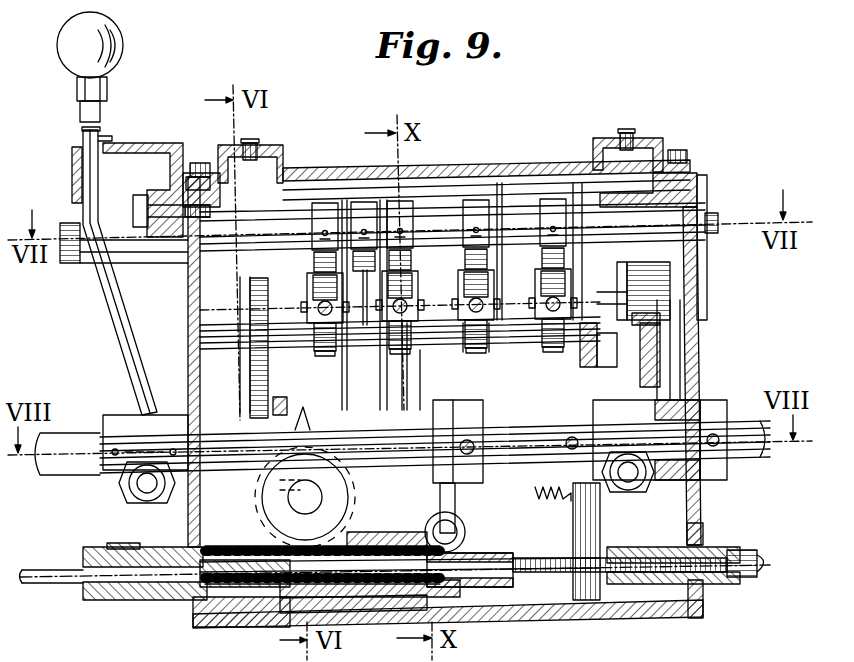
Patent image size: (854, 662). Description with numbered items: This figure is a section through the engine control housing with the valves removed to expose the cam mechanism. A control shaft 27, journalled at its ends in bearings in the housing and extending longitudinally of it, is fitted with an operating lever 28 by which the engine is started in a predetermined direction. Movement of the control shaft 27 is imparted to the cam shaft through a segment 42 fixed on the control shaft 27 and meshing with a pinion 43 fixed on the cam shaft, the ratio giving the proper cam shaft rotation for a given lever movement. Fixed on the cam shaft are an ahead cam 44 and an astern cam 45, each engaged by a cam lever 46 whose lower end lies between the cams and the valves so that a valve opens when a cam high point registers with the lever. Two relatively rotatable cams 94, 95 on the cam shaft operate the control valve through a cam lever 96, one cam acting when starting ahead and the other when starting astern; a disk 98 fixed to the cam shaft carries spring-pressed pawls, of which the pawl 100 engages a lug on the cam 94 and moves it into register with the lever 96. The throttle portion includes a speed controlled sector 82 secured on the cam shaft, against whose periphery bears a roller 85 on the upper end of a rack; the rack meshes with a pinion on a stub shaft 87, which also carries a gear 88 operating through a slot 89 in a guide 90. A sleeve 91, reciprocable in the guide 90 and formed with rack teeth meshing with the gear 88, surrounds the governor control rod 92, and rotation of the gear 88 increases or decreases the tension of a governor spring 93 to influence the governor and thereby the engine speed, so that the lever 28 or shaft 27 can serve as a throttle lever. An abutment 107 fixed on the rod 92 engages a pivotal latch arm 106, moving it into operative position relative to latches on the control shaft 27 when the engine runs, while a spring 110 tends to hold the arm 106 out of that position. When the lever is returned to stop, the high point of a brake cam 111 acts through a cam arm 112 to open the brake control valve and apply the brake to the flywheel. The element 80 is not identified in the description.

The control shaft 27 is at (78, 442).
The operating lever 28 is at (123, 50).
The segment 42 is at (655, 377).
The pinion 43 is at (652, 277).
The ahead cam 44 is at (331, 352).
The astern cam 45 is at (400, 352).
The cam lever 46 is at (309, 266).
The pinion shaft nut 80 is at (453, 495).
The speed controlled sector 82 is at (270, 360).
The roller 85 is at (267, 423).
The stub shaft 87 is at (307, 495).
The gear 88 is at (343, 493).
The slot 89 is at (347, 527).
The guide 90 is at (397, 535).
The sleeve 91 is at (175, 548).
The governor control rod 92 is at (65, 582).
The governor spring 93 is at (241, 583).
The cam 94 is at (537, 348).
The cam 95 is at (557, 350).
The cam lever 96 is at (583, 262).
The disk 98 is at (620, 298).
The pawl 100 is at (610, 362).
The latch arm 106 is at (597, 514).
The abutment 107 is at (652, 578).
The spring 110 is at (540, 501).
The brake cam 111 is at (482, 350).
The cam arm 112 is at (498, 268).